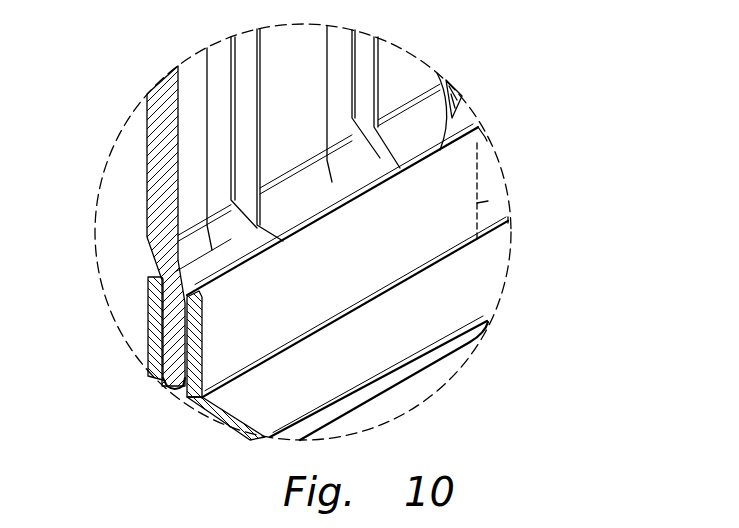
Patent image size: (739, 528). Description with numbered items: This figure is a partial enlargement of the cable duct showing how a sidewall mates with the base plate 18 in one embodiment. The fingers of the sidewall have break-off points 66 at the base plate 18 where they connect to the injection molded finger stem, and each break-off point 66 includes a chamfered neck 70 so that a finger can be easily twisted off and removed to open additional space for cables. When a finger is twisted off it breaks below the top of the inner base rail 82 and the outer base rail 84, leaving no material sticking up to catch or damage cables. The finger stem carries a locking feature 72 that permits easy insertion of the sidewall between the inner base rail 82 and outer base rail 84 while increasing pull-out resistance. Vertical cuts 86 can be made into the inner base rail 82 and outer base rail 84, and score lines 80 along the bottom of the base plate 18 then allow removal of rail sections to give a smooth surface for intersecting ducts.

The base plate 18 is at (442, 292).
The break-off points 66 is at (463, 103).
The chamfered neck 70 is at (475, 123).
The locking feature 72 is at (177, 318).
The score lines 80 is at (183, 371).
The inner base rail 82 is at (190, 376).
The outer base rail 84 is at (148, 297).
The vertical cuts 86 is at (488, 201).